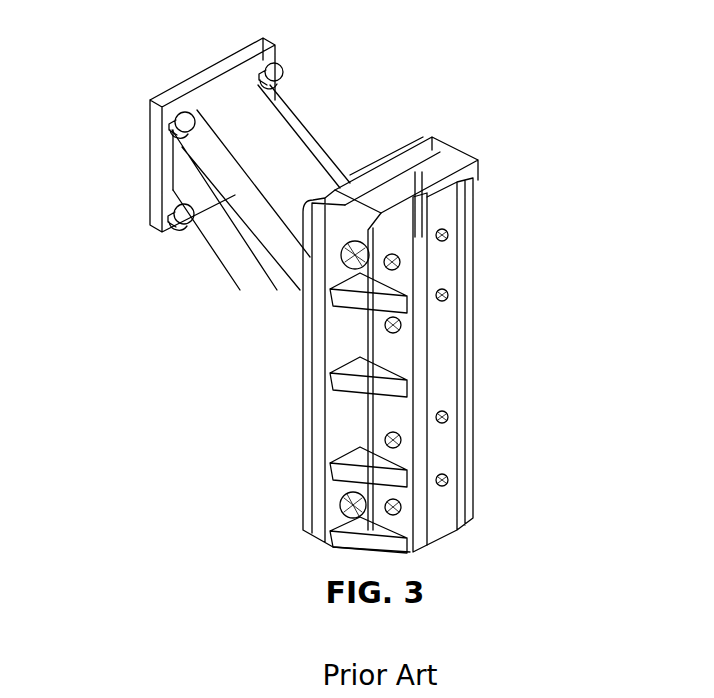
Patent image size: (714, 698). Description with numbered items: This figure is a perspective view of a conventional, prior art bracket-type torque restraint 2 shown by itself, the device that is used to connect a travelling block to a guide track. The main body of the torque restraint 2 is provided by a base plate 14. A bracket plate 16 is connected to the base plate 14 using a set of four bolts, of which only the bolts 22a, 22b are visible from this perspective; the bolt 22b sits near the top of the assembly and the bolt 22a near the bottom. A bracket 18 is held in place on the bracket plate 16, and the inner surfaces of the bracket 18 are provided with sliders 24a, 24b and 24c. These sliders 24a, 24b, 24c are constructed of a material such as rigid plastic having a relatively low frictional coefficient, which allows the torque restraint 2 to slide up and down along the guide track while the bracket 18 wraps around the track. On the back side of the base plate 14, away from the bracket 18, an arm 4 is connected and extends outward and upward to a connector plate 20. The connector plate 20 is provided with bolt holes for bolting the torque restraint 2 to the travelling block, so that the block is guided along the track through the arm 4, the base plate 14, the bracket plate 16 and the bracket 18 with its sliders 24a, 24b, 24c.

The torque restraint 2 is at (489, 222).
The arm 4 is at (276, 143).
The base plate 14 is at (313, 378).
The bracket plate 16 is at (350, 322).
The bracket 18 is at (398, 268).
The connector plate 20 is at (227, 82).
The bolt 22a is at (345, 503).
The bolt 22b is at (341, 238).
The slider 24a is at (440, 282).
The slider 24b is at (427, 223).
The slider 24c is at (408, 193).